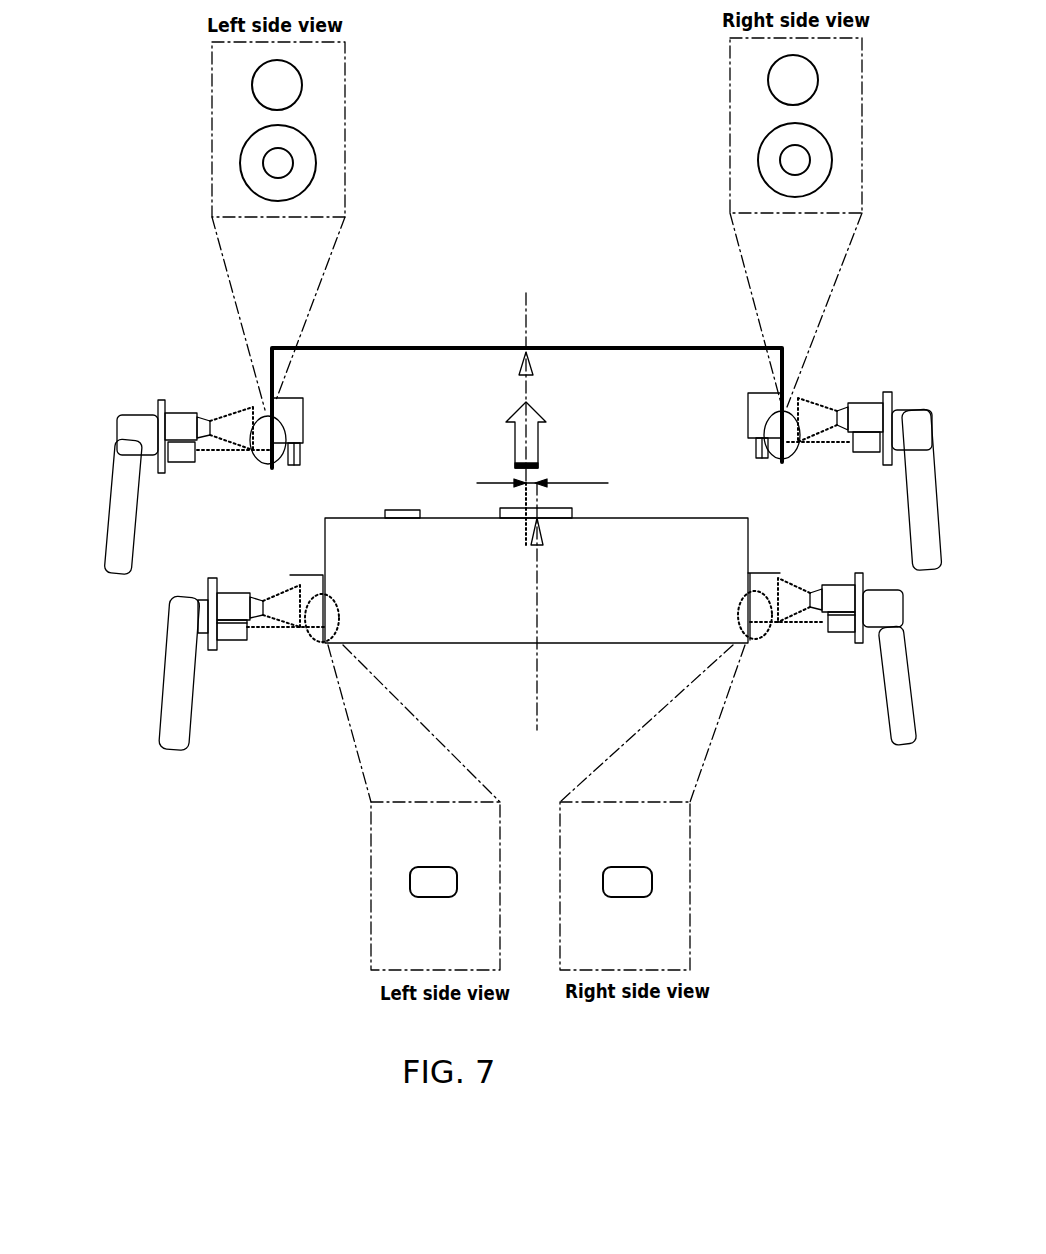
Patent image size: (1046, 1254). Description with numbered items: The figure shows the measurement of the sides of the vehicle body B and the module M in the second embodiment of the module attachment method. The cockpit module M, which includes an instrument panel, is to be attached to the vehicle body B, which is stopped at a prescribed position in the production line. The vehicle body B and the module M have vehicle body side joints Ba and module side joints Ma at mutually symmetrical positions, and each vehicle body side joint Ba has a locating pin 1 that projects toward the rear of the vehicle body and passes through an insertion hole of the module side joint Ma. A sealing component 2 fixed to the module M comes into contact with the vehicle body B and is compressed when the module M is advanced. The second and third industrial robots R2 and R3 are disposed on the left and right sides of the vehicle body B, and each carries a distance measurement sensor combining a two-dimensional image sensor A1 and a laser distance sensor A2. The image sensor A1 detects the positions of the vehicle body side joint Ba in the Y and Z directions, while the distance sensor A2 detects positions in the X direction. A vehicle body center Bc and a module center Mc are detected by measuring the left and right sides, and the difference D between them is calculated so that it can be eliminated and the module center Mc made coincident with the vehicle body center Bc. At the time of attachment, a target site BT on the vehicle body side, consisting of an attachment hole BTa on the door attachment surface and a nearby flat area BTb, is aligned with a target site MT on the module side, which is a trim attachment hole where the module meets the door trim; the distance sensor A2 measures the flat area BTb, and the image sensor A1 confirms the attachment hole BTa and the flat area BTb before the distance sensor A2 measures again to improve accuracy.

The target site on the vehicle body side BT is at (125, 182).
The flat area BTb is at (275, 86).
The attachment hole BTa is at (275, 163).
The vehicle body B is at (390, 346).
The vehicle body center Bc is at (526, 306).
The vehicle body side joint Ba is at (283, 442).
The locating pin 1 is at (305, 447).
The sealing component 2 is at (573, 515).
The difference D is at (542, 470).
The module M is at (457, 614).
The module center Mc is at (537, 663).
The module side joint Ma is at (308, 575).
The target site on the module side MT is at (425, 878).
The second industrial robot R2 is at (117, 410).
The third industrial robot R3 is at (910, 397).
The two-dimensional image sensor A1 is at (182, 410).
The laser distance sensor A2 is at (178, 452).